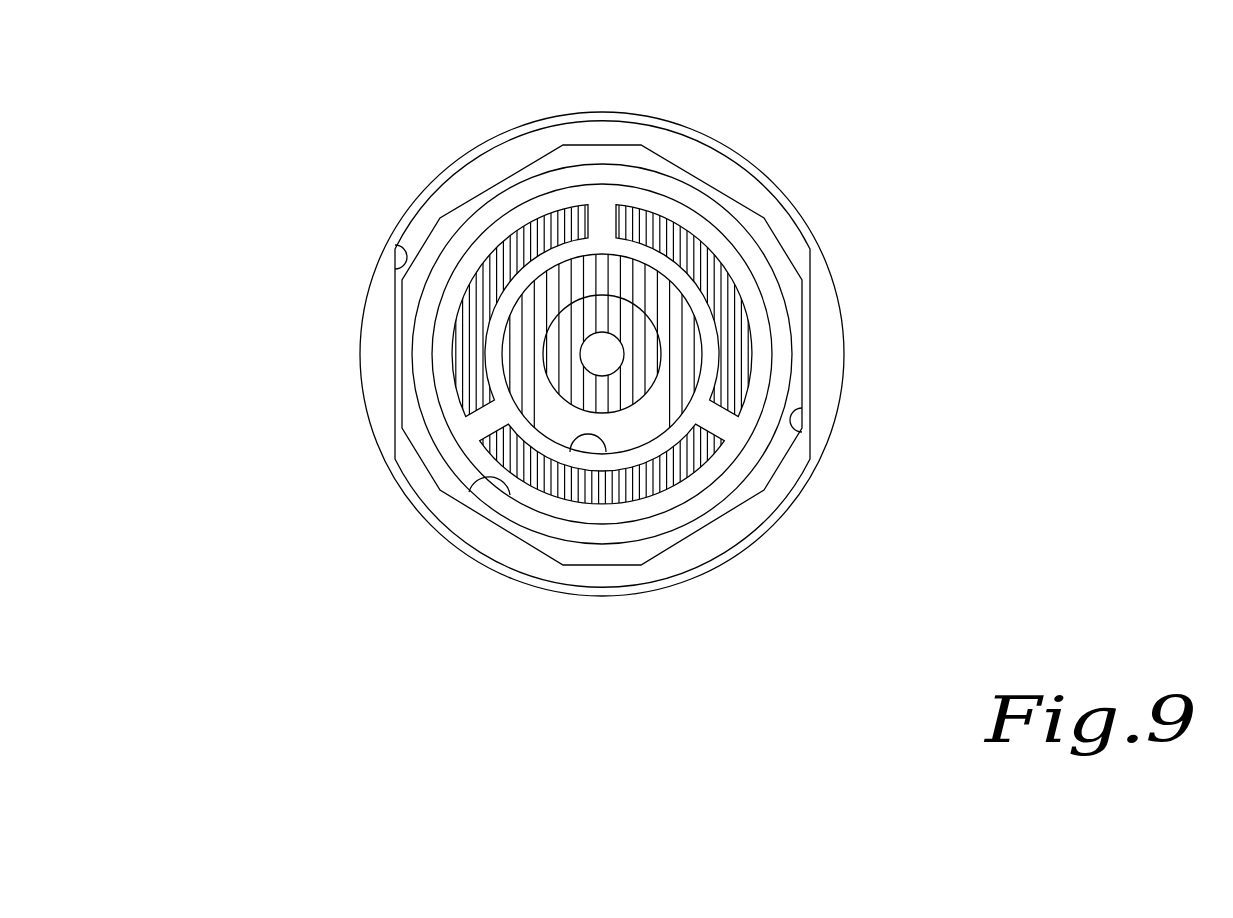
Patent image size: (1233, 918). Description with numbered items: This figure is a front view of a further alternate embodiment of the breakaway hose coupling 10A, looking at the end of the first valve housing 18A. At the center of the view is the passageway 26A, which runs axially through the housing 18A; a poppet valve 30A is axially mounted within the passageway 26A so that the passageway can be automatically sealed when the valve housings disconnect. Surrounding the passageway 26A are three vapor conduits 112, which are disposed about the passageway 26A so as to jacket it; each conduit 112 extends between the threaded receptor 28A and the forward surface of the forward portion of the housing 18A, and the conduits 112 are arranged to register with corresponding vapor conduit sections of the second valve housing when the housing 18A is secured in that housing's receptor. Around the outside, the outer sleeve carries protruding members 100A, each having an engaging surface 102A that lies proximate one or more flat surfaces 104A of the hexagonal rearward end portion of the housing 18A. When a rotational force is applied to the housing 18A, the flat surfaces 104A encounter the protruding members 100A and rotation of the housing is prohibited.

The breakaway hose coupling 10A is at (932, 176).
The protruding member 100A is at (373, 342).
The engaging surface 102A is at (395, 240).
The flat surface 104A is at (405, 402).
The vapor conduit 112 is at (538, 237).
The first valve housing 18A is at (735, 477).
The passageway 26A is at (569, 452).
The threaded receptor 28A is at (469, 492).
The poppet valve 30A is at (635, 390).